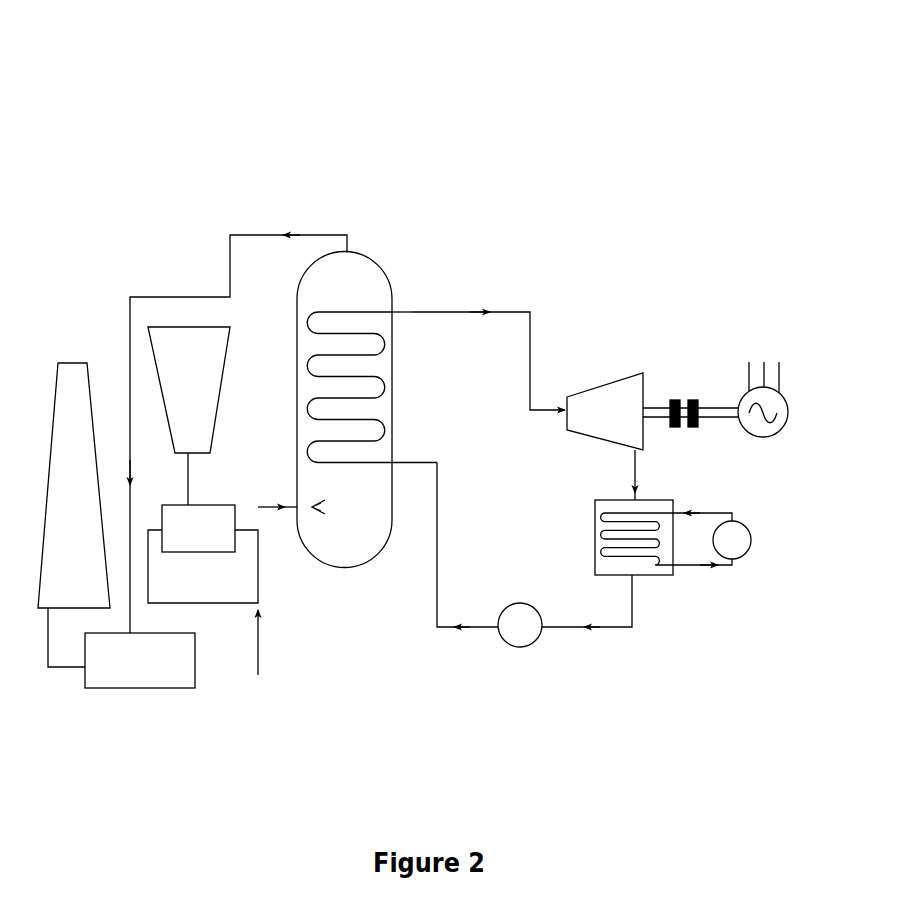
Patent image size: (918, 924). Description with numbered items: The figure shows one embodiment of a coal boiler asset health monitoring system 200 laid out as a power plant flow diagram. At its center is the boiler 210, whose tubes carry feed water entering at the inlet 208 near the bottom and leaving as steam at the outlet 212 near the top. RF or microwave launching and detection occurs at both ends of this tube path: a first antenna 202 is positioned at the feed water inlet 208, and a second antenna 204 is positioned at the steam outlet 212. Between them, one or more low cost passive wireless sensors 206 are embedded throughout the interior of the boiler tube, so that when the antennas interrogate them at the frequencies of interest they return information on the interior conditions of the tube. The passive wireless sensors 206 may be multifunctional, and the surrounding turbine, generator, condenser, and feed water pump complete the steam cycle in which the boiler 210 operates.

The coal boiler asset health monitoring system 200 is at (205, 150).
The first antenna 202 is at (430, 463).
The second antenna 204 is at (418, 303).
The passive wireless sensors 206 is at (348, 312).
The inlet 208 is at (393, 463).
The boiler 210 is at (365, 258).
The outlet 212 is at (392, 312).